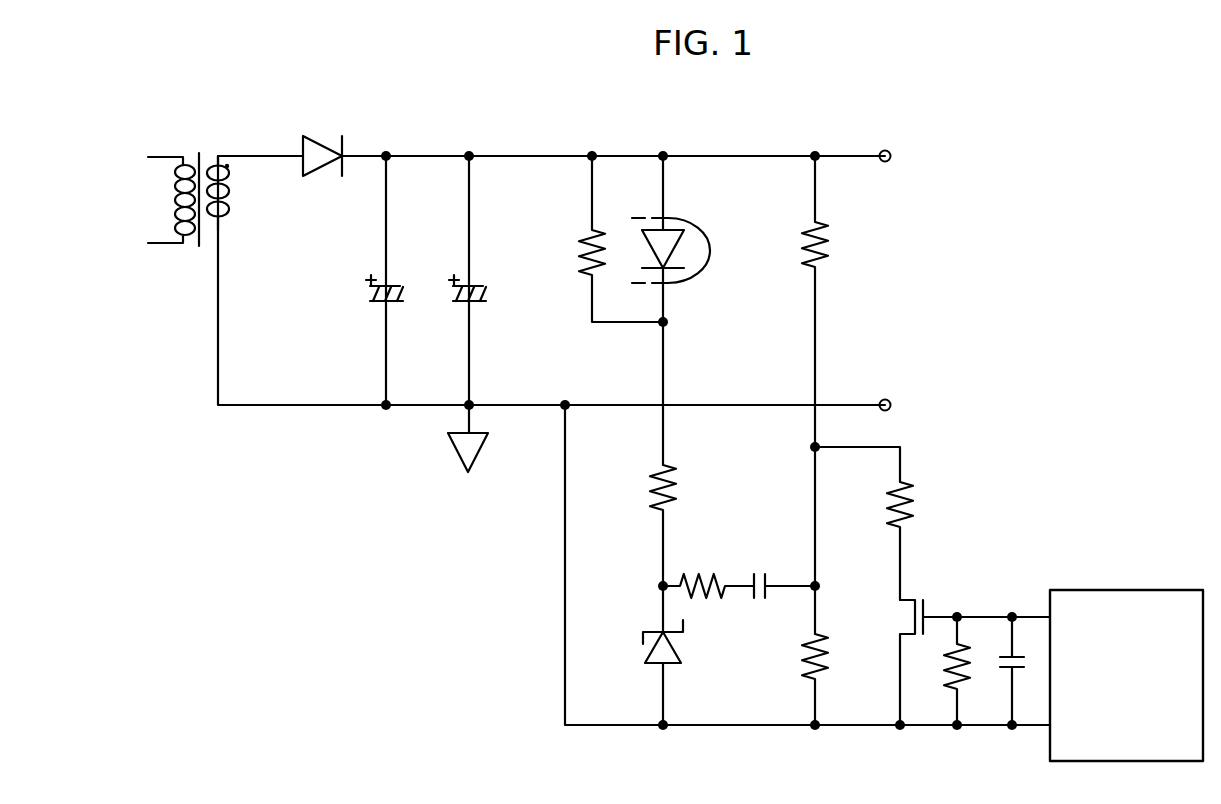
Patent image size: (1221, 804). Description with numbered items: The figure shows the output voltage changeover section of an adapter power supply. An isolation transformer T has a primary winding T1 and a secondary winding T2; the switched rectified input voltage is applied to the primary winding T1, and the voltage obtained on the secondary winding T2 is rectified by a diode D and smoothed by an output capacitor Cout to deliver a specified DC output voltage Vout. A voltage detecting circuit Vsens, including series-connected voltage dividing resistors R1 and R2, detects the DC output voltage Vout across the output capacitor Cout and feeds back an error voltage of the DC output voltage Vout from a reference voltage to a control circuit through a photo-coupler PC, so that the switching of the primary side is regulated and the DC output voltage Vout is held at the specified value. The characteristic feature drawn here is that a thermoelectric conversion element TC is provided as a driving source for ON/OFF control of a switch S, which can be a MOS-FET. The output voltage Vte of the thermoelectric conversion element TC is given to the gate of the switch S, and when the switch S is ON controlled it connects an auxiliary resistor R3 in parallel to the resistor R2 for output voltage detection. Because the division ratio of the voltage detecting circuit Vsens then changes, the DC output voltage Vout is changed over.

The isolation transformer T is at (199, 185).
The primary winding T1 is at (164, 200).
The secondary winding T2 is at (236, 193).
The diode D is at (322, 175).
The output capacitor Cout is at (405, 280).
The photo-coupler PC is at (680, 310).
The voltage dividing resistor R1 is at (837, 395).
The resistor for output voltage detection R2 is at (797, 679).
The auxiliary resistor R3 is at (885, 523).
The switch S is at (962, 662).
The thermoelectric conversion element TC is at (1107, 590).
The DC output voltage Vout is at (885, 129).
The output voltage of the thermoelectric conversion element Vte is at (988, 652).
The voltage detecting circuit Vsens is at (713, 523).